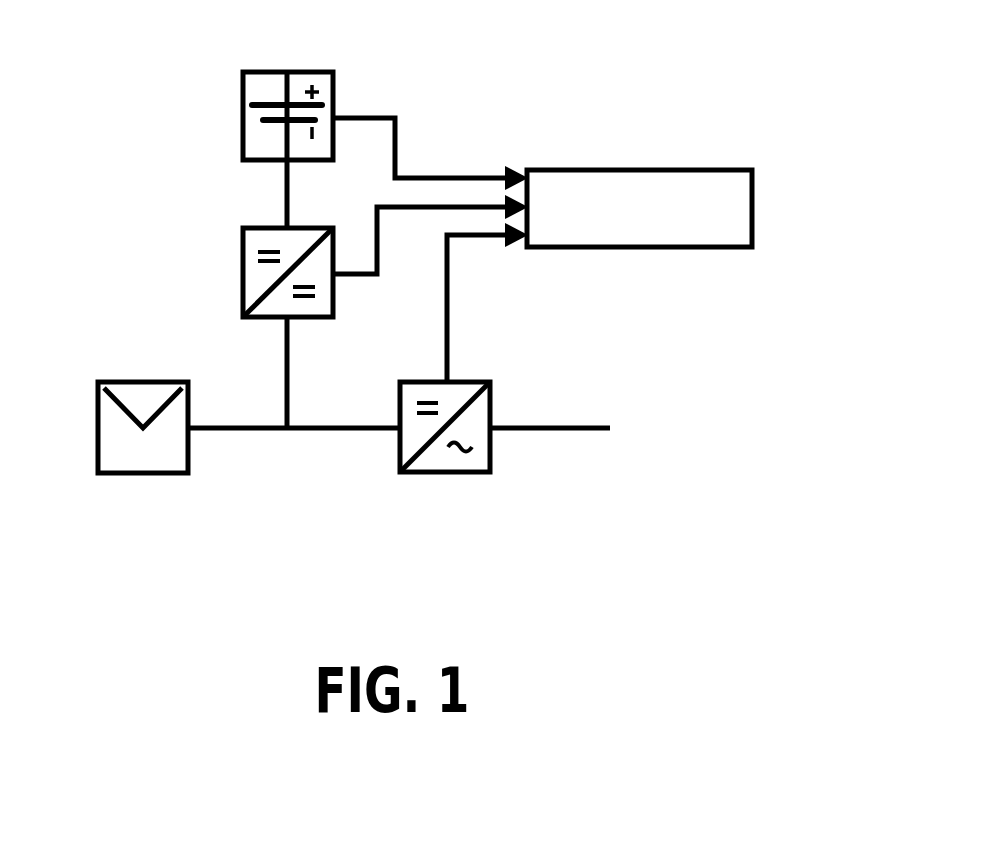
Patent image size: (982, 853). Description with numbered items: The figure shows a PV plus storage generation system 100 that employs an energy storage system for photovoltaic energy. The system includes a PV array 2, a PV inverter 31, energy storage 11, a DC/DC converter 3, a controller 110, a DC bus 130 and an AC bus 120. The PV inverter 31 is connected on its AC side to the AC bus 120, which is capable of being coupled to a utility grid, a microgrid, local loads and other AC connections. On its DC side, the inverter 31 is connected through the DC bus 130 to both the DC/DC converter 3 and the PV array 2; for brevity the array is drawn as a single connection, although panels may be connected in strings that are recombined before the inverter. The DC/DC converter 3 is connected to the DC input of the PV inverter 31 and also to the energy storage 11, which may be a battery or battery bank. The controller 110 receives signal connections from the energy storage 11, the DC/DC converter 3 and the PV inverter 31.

The PV plus storage generation system 100 is at (492, 40).
The energy storage 11 is at (287, 50).
The DC/DC converter 3 is at (220, 286).
The PV array 2 is at (150, 498).
The PV inverter 31 is at (447, 498).
The DC bus 130 is at (294, 451).
The AC bus 120 is at (584, 429).
The controller 110 is at (542, 182).